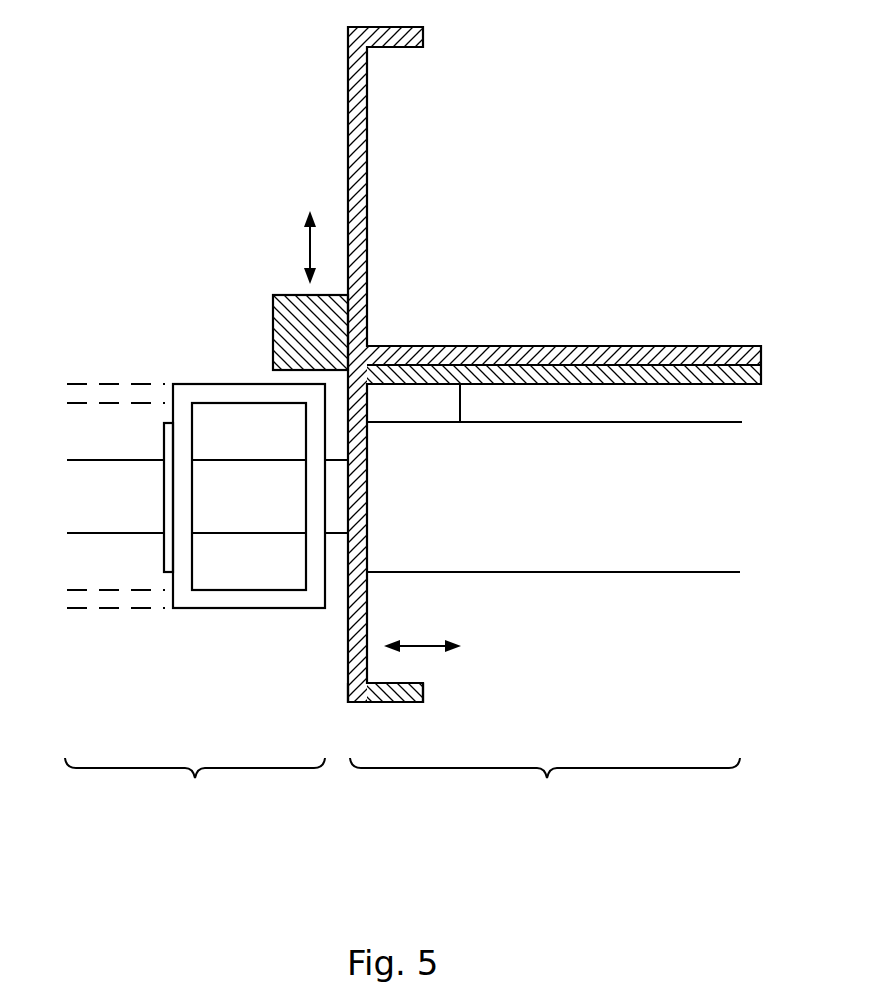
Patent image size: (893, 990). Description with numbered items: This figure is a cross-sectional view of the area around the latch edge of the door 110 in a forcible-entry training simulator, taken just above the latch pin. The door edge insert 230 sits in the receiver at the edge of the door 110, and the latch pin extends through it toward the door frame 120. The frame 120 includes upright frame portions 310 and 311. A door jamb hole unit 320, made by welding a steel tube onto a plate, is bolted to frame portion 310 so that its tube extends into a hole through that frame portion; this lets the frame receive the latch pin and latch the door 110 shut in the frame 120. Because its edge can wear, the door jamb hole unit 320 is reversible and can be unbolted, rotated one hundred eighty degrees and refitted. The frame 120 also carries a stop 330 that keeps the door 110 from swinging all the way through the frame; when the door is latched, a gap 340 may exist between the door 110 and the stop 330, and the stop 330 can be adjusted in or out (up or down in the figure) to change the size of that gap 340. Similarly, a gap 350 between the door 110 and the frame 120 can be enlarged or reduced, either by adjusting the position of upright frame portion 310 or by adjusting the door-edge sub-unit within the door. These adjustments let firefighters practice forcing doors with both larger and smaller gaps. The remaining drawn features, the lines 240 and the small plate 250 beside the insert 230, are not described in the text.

The door 110 is at (195, 784).
The door frame 120 is at (545, 784).
The door edge insert 230 is at (207, 610).
The lead wires 240 is at (98, 456).
The end plate 250 is at (162, 550).
The upright frame portion 310 is at (390, 705).
The upright frame portion 311 is at (370, 208).
The door jamb hole unit 320 is at (622, 530).
The stop 330 is at (272, 305).
The gap 340 is at (270, 378).
The gap 350 is at (333, 611).